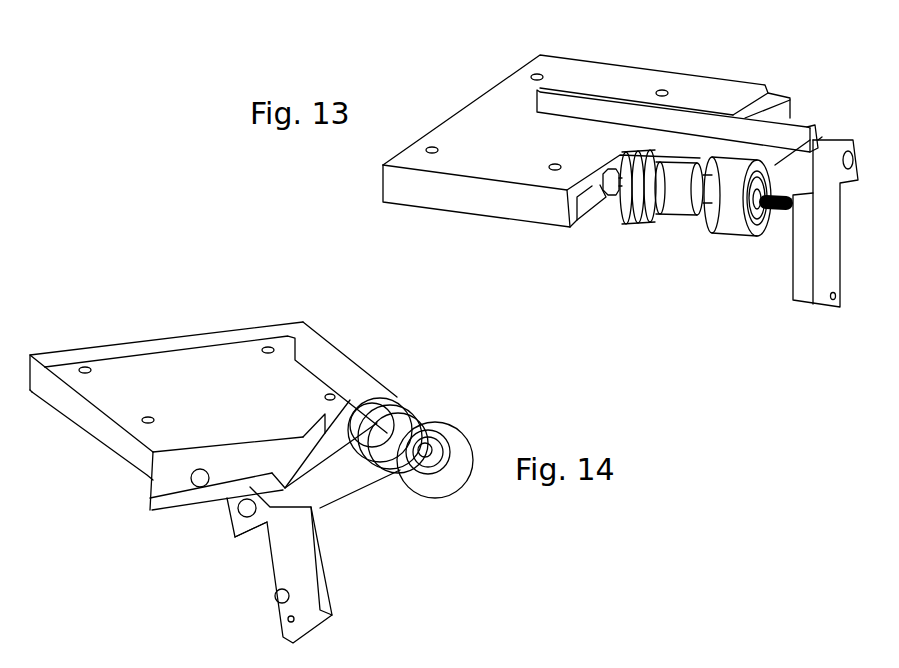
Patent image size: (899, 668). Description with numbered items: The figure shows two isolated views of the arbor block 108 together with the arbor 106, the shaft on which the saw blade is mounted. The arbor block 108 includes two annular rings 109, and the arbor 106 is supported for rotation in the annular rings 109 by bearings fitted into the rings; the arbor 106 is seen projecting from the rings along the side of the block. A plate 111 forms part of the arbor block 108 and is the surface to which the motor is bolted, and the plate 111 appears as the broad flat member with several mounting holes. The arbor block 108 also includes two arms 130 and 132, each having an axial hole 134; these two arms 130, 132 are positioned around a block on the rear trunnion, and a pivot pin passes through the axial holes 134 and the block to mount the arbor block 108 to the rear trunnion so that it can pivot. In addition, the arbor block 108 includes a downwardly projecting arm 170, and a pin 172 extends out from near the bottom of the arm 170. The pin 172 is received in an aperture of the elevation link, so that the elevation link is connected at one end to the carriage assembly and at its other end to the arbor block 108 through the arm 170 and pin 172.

In FIG. 13, the arbor 106 is at (777, 213).
In FIG. 13, the arbor block 108 is at (592, 60).
In FIG. 14, the arbor block 108 is at (84, 350).
In FIG. 13, the annular rings 109 is at (708, 215).
In FIG. 14, the annular rings 109 is at (417, 463).
In FIG. 13, the plate 111 is at (490, 128).
In FIG. 14, the plate 111 is at (202, 385).
In FIG. 14, the arm 130 is at (143, 490).
In FIG. 13, the arm 132 is at (827, 138).
In FIG. 14, the arm 132 is at (234, 525).
In FIG. 13, the axial holes 134 is at (851, 151).
In FIG. 14, the axial holes 134 is at (240, 502).
In FIG. 13, the downwardly projecting arm 170 is at (806, 285).
In FIG. 14, the downwardly projecting arm 170 is at (305, 570).
In FIG. 14, the pin 172 is at (278, 600).